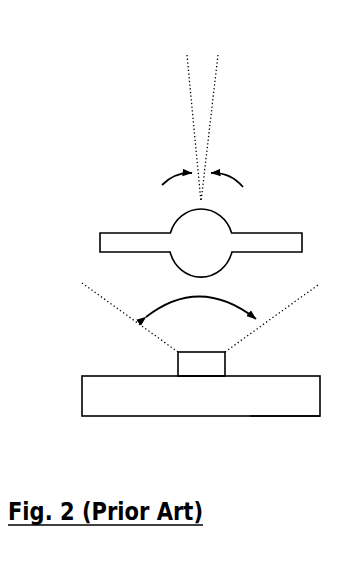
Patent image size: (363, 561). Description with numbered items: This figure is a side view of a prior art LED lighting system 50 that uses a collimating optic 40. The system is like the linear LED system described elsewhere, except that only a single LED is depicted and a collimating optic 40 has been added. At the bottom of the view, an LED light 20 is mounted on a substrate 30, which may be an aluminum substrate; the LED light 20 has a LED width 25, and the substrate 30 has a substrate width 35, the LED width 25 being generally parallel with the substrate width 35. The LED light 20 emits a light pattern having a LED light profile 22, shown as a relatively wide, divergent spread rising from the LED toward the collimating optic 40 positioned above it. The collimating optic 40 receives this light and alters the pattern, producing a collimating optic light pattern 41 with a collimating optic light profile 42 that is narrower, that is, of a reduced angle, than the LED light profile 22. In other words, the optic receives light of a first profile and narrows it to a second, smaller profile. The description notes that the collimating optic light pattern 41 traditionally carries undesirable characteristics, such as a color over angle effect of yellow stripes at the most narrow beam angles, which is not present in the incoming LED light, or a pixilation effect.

The LED lighting system 50 is at (81, 124).
The collimating optic light pattern 41 is at (197, 54).
The collimating optic light profile 42 is at (231, 173).
The collimating optic 40 is at (236, 224).
The LED light profile 22 is at (227, 295).
The LED light 20 is at (234, 363).
The substrate 30 is at (79, 394).
The LED width 25 is at (189, 383).
The substrate width 35 is at (288, 423).